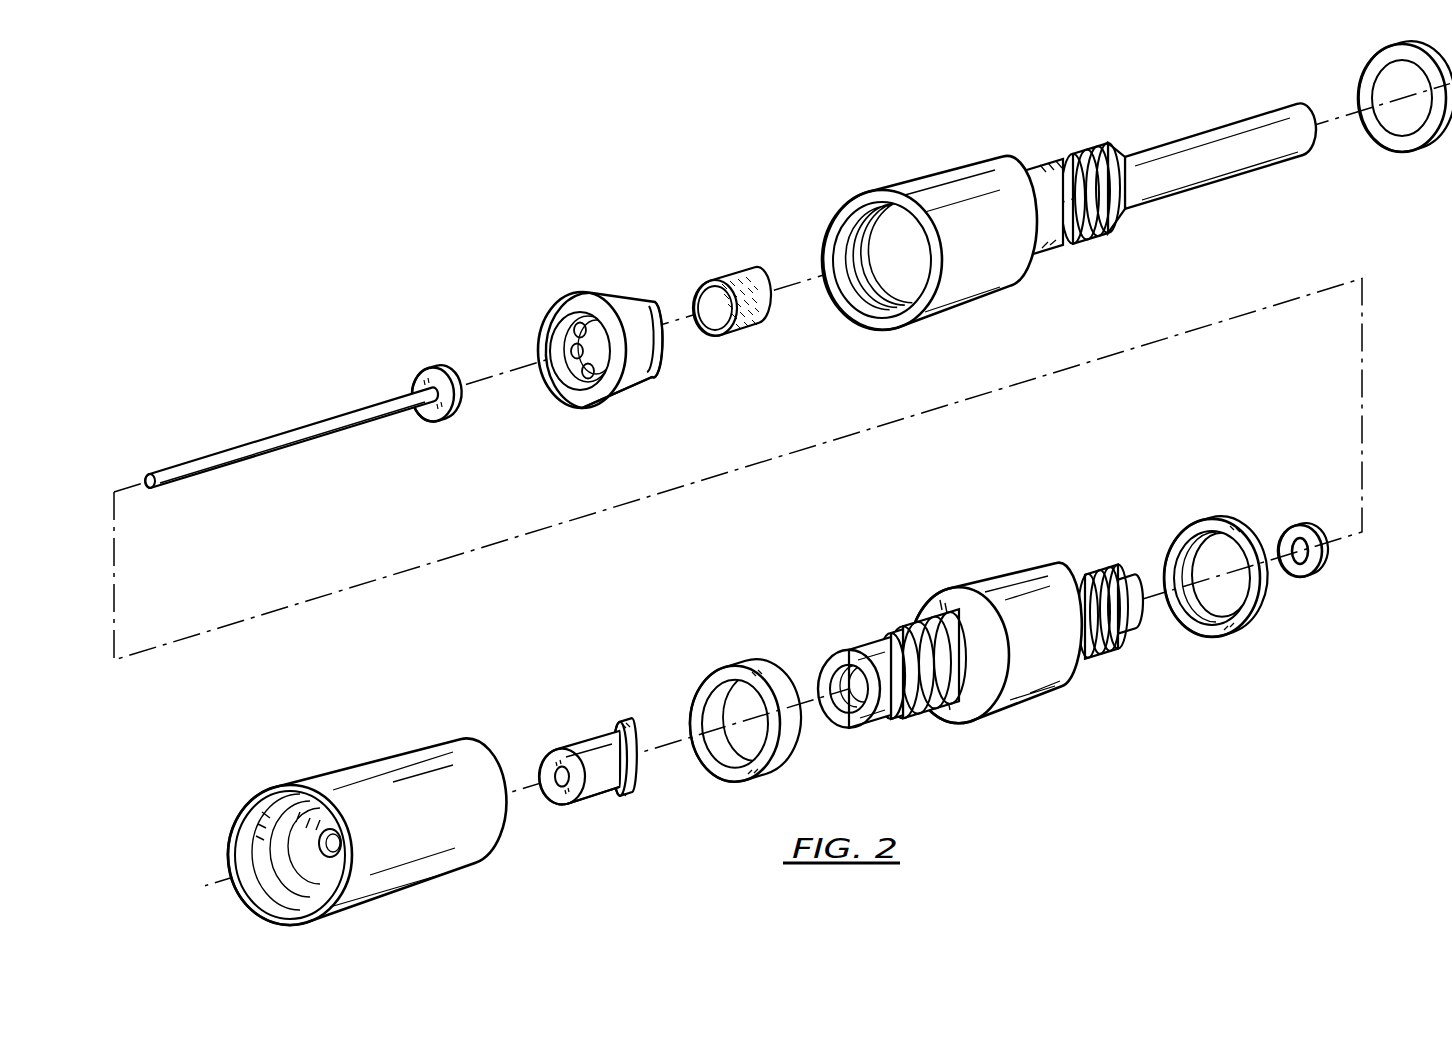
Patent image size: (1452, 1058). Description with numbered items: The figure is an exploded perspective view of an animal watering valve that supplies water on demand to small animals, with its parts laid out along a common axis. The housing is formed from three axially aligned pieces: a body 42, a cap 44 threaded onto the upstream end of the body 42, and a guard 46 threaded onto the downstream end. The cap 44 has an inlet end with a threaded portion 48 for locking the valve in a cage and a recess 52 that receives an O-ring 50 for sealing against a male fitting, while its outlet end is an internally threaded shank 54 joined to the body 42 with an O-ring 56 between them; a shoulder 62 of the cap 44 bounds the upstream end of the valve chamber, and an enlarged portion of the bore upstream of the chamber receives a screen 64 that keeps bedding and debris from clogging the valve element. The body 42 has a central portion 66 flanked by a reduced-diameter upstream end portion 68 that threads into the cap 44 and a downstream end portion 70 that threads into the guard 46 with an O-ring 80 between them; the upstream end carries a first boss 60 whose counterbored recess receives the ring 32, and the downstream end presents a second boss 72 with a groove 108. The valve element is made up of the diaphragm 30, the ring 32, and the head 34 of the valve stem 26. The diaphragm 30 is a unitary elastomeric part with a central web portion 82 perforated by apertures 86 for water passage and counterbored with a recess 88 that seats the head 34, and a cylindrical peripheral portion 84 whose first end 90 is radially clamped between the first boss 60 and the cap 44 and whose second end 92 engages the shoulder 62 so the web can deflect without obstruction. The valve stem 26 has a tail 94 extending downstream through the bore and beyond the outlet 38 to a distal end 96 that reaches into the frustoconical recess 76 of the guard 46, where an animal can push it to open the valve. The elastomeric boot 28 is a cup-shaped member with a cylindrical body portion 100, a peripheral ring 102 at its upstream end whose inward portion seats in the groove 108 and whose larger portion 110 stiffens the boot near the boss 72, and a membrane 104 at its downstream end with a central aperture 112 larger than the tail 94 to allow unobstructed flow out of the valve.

The valve stem 26 is at (293, 420).
The elastomeric boot 28 is at (581, 766).
The diaphragm 30 is at (600, 341).
The ring 32 is at (1302, 525).
The head 34 is at (428, 368).
The outlet 38 is at (325, 850).
The body 42 is at (997, 641).
The cap 44 is at (1049, 222).
The guard 46 is at (339, 826).
The threaded portion 48 is at (1067, 158).
The O-ring 50 is at (1370, 63).
The recess 52 is at (1078, 244).
The internally threaded shank 54 is at (877, 202).
The O-ring 56 is at (1213, 520).
The first boss 60 is at (1115, 578).
The shoulder 62 is at (883, 290).
The screen 64 is at (748, 278).
The central portion 66 is at (1033, 703).
The upstream end portion 68 is at (1112, 650).
The downstream end portion 70 is at (950, 700).
The second boss 72 is at (845, 650).
The frustoconical recess 76 is at (272, 823).
The O-ring 80 is at (763, 667).
The web portion 82 is at (588, 390).
The cylindrical peripheral portion 84 is at (635, 392).
The apertures 86 is at (570, 348).
The recess 88 is at (583, 372).
The first end 90 is at (560, 358).
The second end 92 is at (657, 372).
The tail 94 is at (243, 452).
The distal end 96 is at (148, 490).
The cylindrical body portion 100 is at (592, 751).
The peripheral ring 102 is at (600, 807).
The membrane 104 is at (563, 802).
The groove 108 is at (900, 643).
The larger portion 110 is at (627, 731).
The central aperture 112 is at (558, 772).